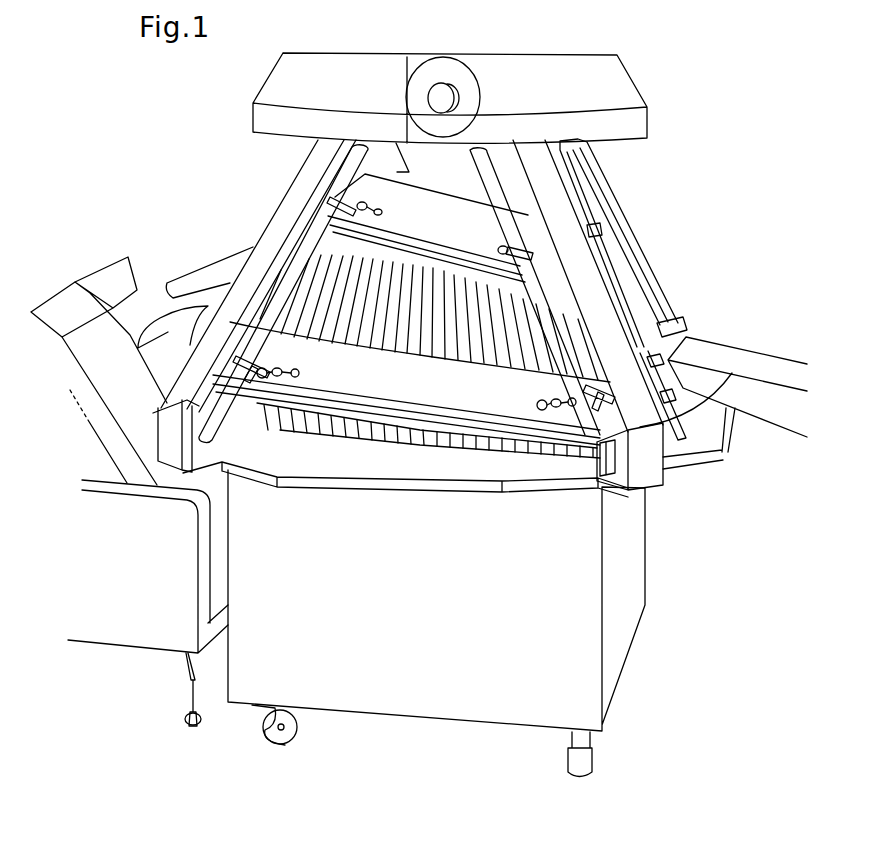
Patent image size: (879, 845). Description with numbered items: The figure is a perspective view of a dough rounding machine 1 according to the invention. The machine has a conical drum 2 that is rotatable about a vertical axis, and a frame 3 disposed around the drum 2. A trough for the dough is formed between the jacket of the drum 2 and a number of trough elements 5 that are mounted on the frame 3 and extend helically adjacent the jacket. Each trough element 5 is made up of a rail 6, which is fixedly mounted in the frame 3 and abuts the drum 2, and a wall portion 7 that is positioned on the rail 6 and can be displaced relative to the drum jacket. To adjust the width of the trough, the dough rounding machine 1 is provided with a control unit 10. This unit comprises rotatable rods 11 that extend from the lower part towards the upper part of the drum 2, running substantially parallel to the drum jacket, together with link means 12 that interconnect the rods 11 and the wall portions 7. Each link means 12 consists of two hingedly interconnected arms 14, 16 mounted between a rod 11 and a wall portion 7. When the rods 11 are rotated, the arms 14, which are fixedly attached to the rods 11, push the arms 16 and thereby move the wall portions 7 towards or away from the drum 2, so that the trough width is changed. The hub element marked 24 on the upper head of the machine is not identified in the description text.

The dough rounding machine 1 is at (276, 194).
The conical drum 2 is at (341, 293).
The frame 3 is at (652, 472).
The trough elements 5 is at (425, 444).
The rail 6 is at (487, 427).
The wall portion 7 is at (440, 205).
The control unit 10 is at (531, 48).
The rotatable rods 11 is at (620, 307).
The link means 12 is at (285, 412).
The arm 14 is at (260, 354).
The arm 16 is at (375, 210).
The drive hub 24 is at (450, 66).